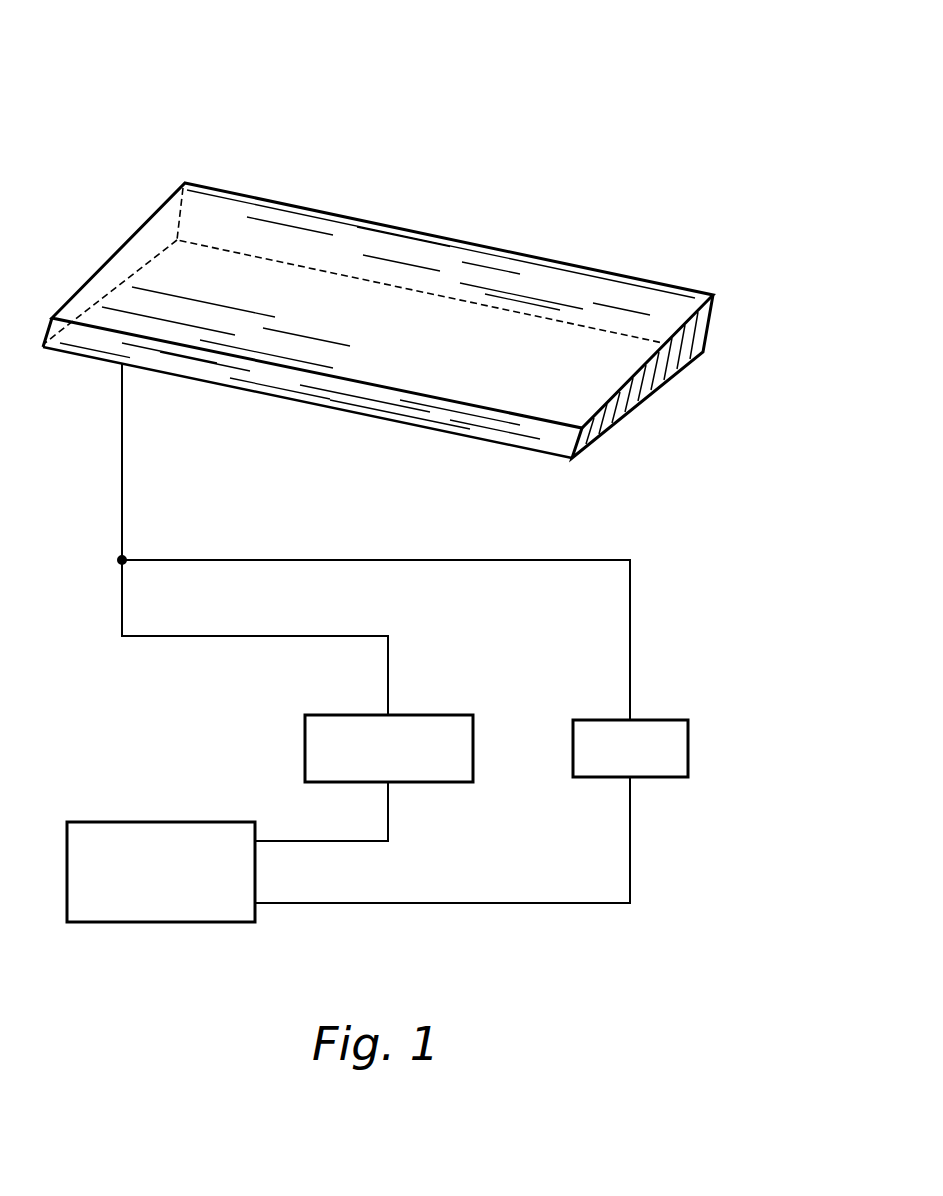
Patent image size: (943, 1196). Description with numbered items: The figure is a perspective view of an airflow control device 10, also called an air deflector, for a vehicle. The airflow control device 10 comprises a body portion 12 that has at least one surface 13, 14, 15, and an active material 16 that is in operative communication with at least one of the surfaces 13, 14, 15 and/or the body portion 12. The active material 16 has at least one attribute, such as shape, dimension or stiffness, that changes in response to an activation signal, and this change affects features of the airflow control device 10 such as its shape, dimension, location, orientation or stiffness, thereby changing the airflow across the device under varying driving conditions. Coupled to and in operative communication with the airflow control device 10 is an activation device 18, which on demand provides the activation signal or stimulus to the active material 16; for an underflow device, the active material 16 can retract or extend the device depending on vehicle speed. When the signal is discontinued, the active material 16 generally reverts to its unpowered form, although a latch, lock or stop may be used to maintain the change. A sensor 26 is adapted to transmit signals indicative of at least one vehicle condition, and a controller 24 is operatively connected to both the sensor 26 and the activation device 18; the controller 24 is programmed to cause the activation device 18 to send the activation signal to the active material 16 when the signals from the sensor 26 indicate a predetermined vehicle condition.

The airflow control device 10 is at (518, 114).
The body portion 12 is at (712, 332).
The surface 13 is at (240, 272).
The surface 14 is at (646, 389).
The surface 15 is at (340, 402).
The active material 16 is at (495, 278).
The activation device 18 is at (426, 715).
The controller 24 is at (137, 822).
The sensor 26 is at (690, 737).